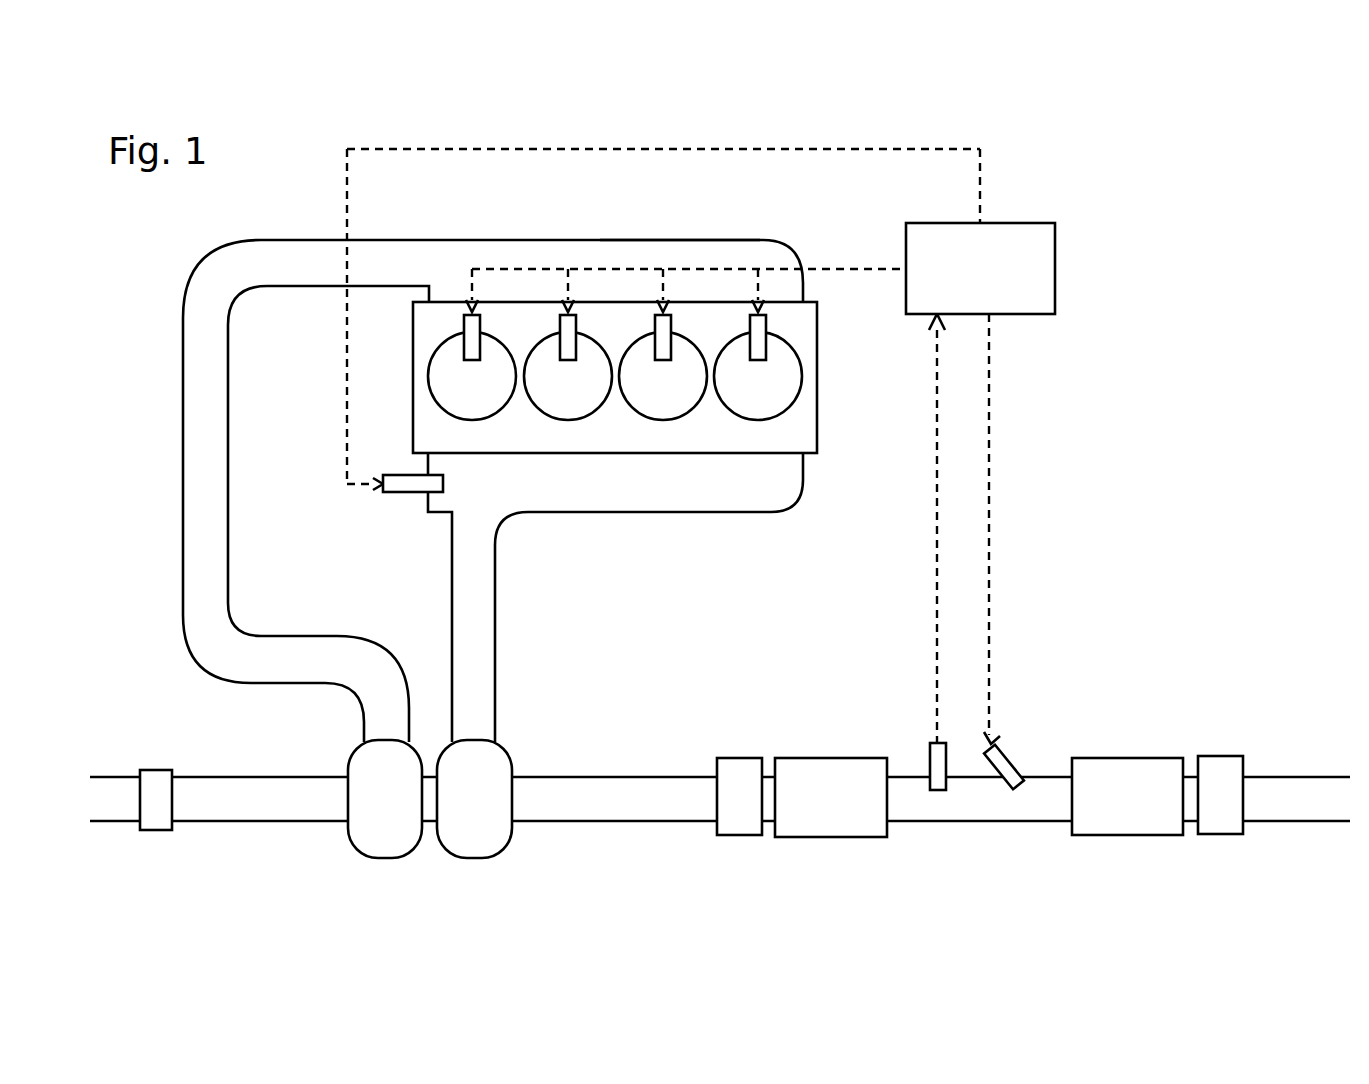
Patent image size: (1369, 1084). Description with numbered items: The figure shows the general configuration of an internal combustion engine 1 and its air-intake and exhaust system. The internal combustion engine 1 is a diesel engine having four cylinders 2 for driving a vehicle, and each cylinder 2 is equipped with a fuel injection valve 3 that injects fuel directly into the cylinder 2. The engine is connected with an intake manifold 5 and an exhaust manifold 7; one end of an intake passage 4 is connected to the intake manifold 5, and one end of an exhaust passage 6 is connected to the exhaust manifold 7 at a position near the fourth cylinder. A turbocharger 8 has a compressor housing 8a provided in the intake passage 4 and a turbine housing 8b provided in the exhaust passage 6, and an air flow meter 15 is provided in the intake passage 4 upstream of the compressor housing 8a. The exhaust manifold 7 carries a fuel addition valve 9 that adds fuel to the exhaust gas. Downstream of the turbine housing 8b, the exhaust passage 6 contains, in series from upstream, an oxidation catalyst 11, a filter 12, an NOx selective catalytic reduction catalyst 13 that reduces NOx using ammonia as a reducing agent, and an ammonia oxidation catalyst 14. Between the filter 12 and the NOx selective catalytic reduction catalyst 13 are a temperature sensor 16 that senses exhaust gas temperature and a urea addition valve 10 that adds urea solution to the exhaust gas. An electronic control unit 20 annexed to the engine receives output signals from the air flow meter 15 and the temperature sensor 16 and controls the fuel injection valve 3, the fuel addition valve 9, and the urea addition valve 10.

The internal combustion engine 1 is at (412, 377).
The cylinder 2 is at (731, 436).
The fuel injection valve 3 is at (788, 322).
The intake passage 4 is at (181, 454).
The intake manifold 5 is at (612, 239).
The exhaust passage 6 is at (497, 633).
The exhaust manifold 7 is at (643, 513).
The turbocharger 8 is at (430, 850).
The compressor housing 8a is at (377, 860).
The turbine housing 8b is at (474, 826).
The fuel addition valve 9 is at (410, 493).
The urea addition valve 10 is at (1010, 758).
The oxidation catalyst 11 is at (735, 837).
The filter 12 is at (832, 838).
The NOx selective catalytic reduction catalyst 13 is at (1127, 837).
The ammonia oxidation catalyst 14 is at (1222, 835).
The air flow meter 15 is at (157, 832).
The temperature sensor 16 is at (927, 760).
The electronic control unit (ECU) 20 is at (1023, 222).